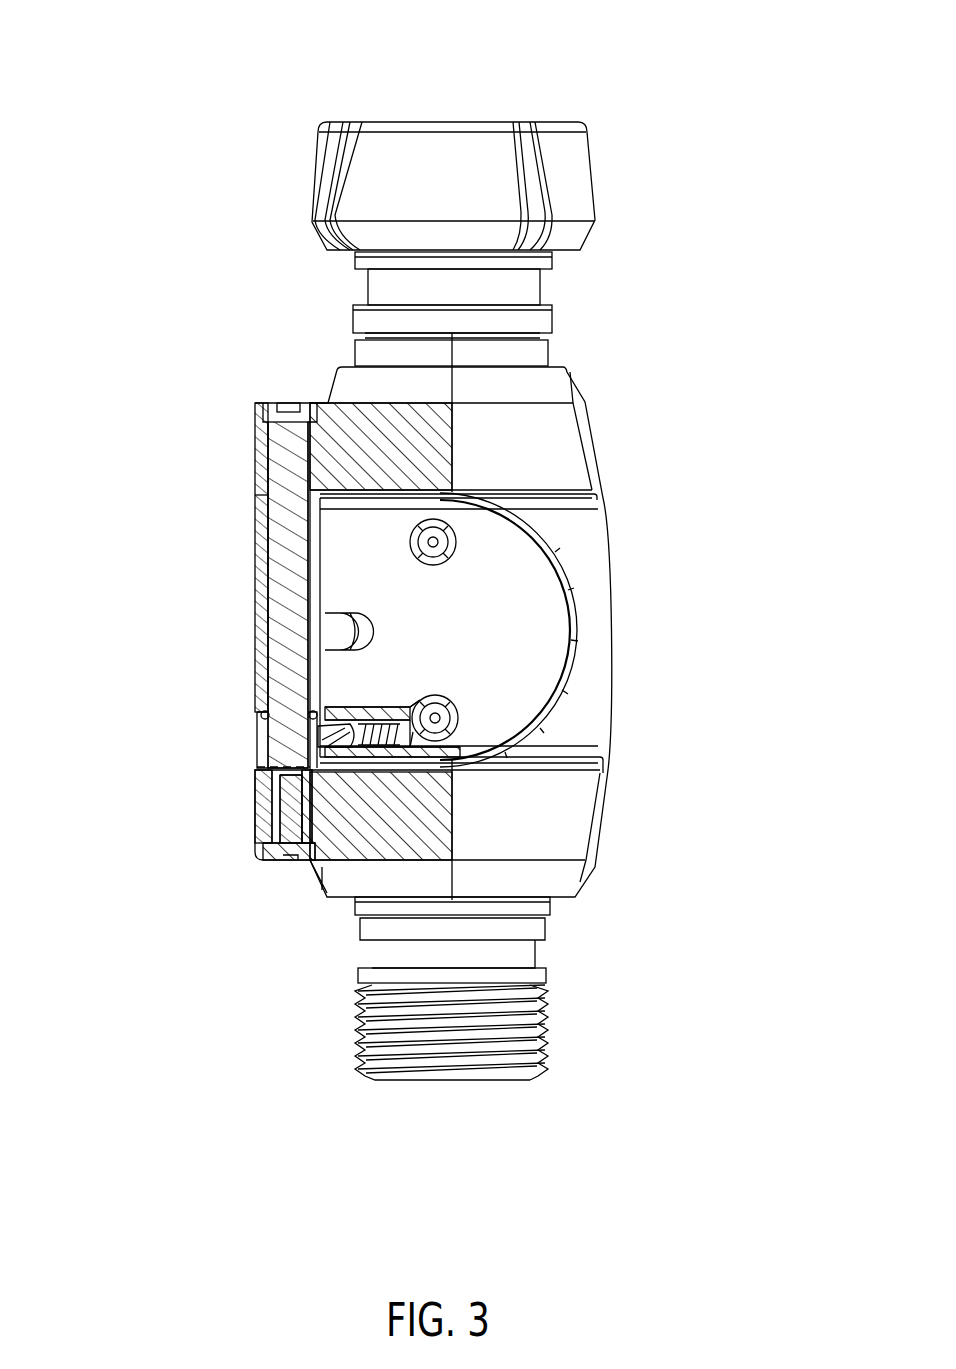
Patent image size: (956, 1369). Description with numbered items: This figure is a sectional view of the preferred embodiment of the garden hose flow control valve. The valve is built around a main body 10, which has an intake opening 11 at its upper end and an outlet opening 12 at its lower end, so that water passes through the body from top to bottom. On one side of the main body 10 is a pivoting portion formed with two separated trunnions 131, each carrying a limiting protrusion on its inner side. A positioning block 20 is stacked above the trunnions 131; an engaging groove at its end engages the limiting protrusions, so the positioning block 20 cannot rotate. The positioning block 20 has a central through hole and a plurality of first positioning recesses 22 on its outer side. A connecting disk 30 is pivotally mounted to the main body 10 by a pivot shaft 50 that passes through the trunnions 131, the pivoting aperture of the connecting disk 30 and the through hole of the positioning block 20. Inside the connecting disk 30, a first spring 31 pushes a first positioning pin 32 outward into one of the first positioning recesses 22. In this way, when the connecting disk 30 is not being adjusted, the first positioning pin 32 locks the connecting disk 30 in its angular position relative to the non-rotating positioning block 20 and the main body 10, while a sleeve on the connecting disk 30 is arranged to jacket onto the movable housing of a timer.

The main body 10 is at (628, 690).
The intake opening 11 is at (455, 122).
The outlet opening 12 is at (445, 1085).
The positioning block 20 is at (256, 746).
The first positioning recess 22 is at (336, 735).
The connecting disk 30 is at (530, 580).
The first spring 31 is at (380, 722).
The first positioning pin 32 is at (318, 702).
The pivot shaft 50 is at (290, 408).
The trunnion 131 is at (262, 463).